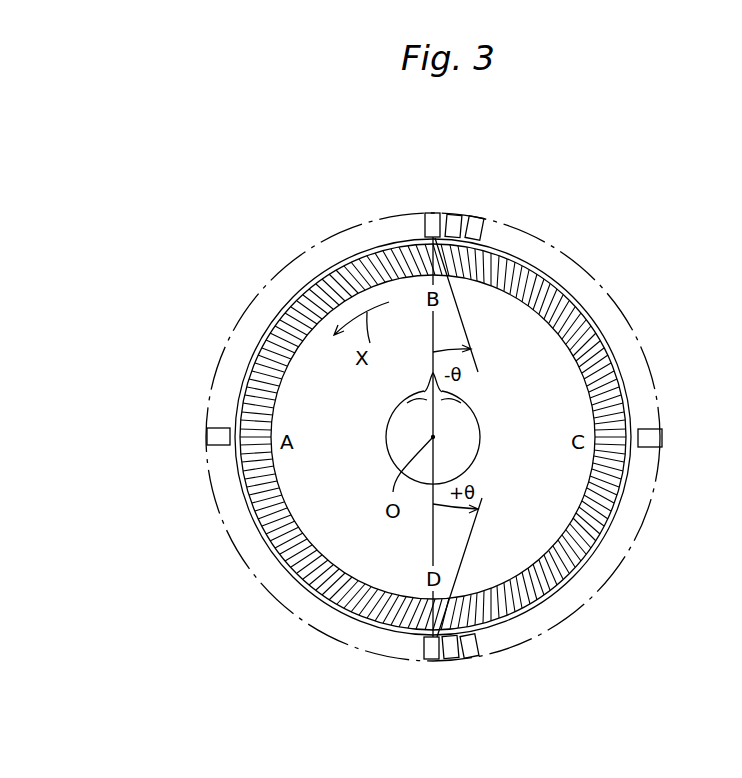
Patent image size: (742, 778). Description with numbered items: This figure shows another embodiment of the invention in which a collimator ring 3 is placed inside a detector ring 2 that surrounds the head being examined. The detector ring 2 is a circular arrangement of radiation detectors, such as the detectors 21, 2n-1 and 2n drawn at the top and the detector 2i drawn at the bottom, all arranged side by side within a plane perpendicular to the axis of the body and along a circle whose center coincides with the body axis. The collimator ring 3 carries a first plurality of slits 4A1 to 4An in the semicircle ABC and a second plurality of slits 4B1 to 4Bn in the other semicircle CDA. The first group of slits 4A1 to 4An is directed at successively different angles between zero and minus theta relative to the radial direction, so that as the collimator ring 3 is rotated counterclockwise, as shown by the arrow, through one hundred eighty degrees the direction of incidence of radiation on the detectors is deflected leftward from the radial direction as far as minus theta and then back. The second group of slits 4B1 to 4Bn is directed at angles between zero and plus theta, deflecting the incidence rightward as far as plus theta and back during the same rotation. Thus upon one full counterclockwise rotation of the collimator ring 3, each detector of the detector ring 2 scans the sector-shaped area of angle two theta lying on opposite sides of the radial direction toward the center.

The detector ring 2 is at (605, 262).
The collimator ring 3 is at (559, 268).
The radiation detector 2n-1 is at (432, 213).
The radiation detector 2n is at (454, 215).
The radiation detector 21 is at (476, 217).
The radiation detector 2i is at (432, 659).
The slit 4A1 is at (245, 431).
The slit 4An is at (628, 431).
The slit 4B1 is at (620, 442).
The slit 4Bn is at (245, 444).